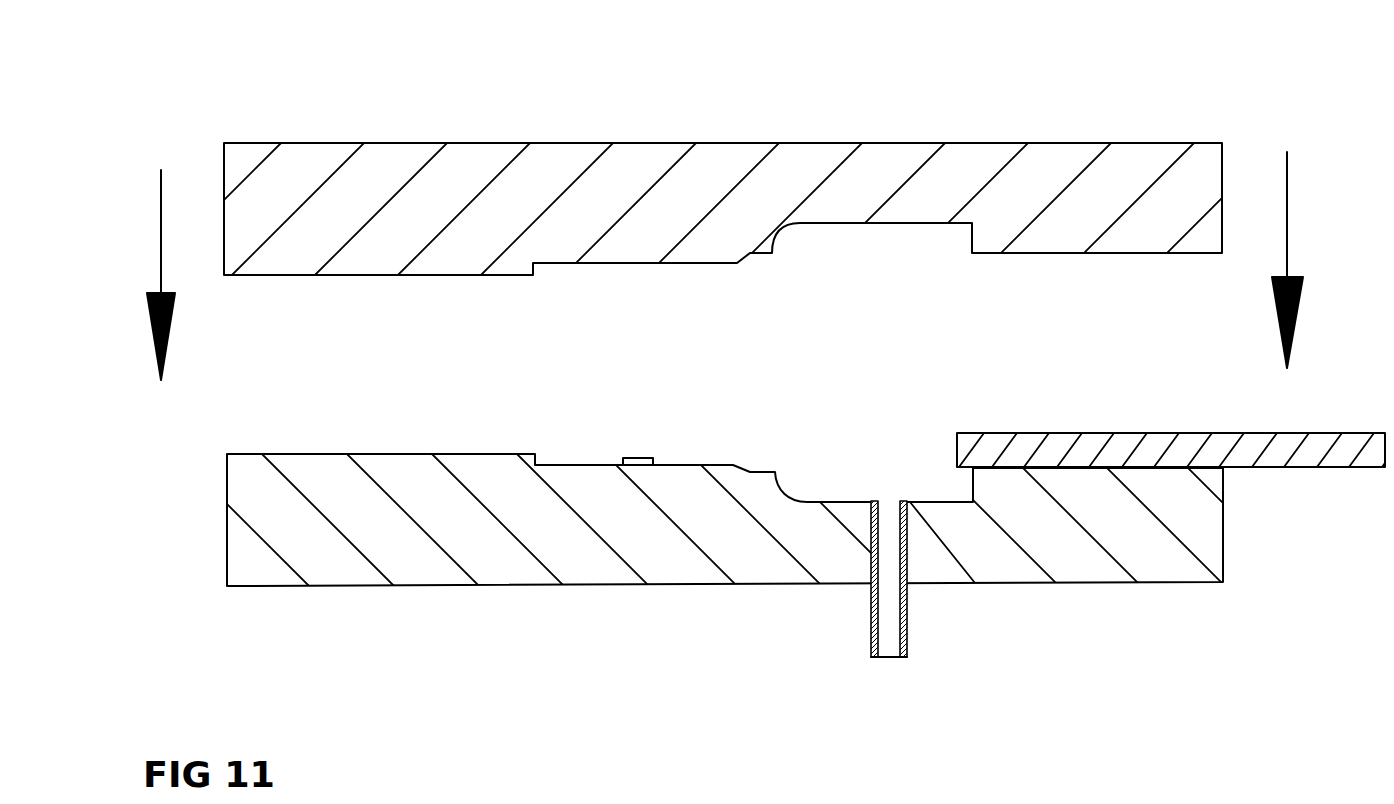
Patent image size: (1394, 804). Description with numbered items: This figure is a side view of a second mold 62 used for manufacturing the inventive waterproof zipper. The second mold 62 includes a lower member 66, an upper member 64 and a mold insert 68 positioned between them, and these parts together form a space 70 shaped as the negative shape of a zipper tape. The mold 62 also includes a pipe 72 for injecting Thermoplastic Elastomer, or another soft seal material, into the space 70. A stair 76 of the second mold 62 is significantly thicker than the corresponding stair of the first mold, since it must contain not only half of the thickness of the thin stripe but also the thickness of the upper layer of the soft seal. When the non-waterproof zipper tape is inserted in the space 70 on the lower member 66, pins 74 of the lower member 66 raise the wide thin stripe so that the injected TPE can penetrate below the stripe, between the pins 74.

The second mold 62 is at (278, 83).
The upper member 64 is at (893, 162).
The lower member 66 is at (225, 527).
The mold insert 68 is at (1260, 457).
The space 70 is at (880, 223).
The pipe 72 is at (913, 622).
The pins 74 is at (652, 467).
The stair 76 is at (540, 268).